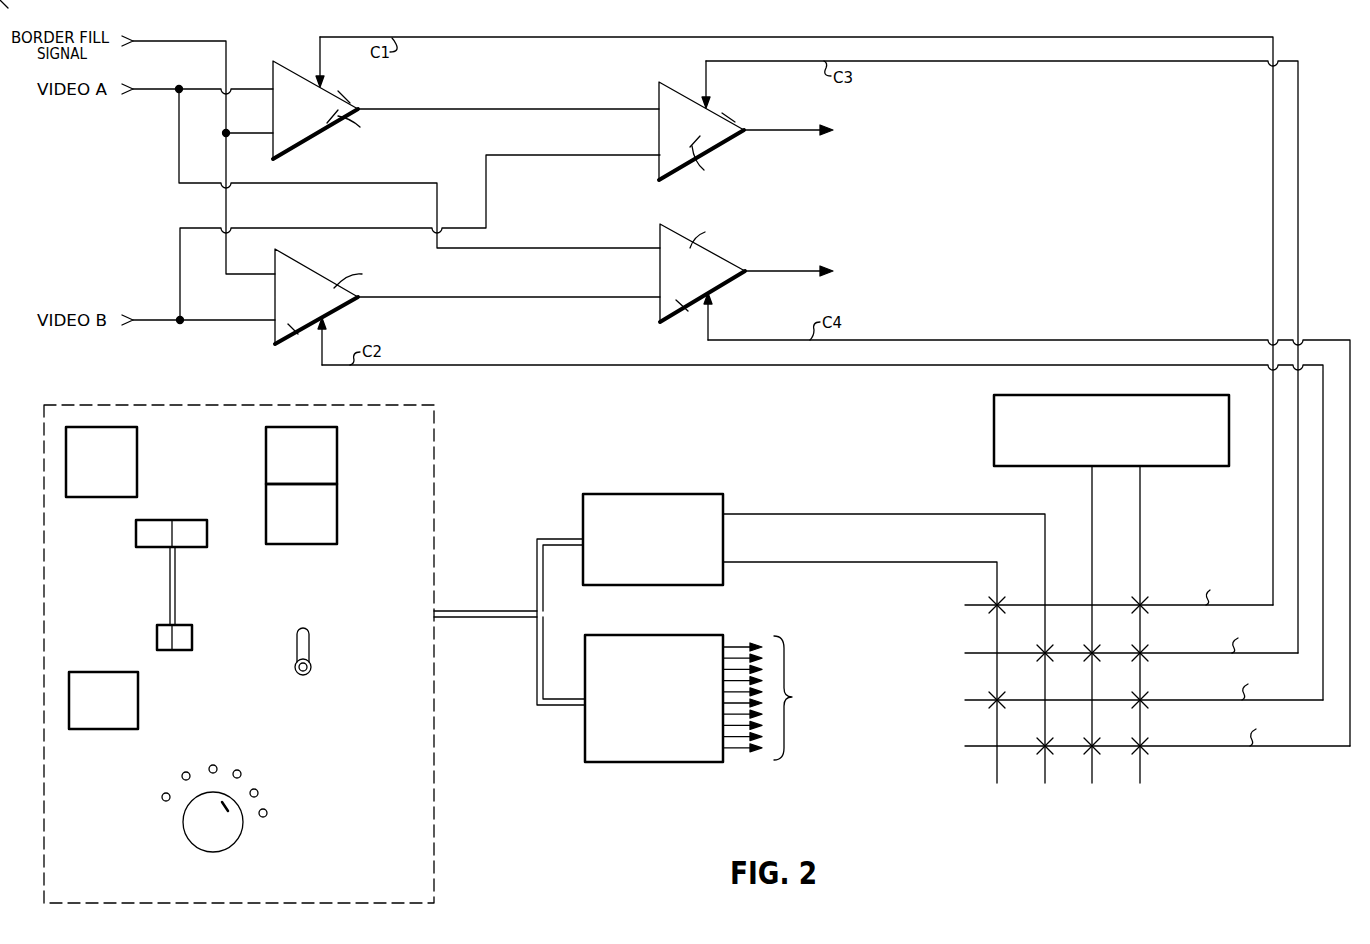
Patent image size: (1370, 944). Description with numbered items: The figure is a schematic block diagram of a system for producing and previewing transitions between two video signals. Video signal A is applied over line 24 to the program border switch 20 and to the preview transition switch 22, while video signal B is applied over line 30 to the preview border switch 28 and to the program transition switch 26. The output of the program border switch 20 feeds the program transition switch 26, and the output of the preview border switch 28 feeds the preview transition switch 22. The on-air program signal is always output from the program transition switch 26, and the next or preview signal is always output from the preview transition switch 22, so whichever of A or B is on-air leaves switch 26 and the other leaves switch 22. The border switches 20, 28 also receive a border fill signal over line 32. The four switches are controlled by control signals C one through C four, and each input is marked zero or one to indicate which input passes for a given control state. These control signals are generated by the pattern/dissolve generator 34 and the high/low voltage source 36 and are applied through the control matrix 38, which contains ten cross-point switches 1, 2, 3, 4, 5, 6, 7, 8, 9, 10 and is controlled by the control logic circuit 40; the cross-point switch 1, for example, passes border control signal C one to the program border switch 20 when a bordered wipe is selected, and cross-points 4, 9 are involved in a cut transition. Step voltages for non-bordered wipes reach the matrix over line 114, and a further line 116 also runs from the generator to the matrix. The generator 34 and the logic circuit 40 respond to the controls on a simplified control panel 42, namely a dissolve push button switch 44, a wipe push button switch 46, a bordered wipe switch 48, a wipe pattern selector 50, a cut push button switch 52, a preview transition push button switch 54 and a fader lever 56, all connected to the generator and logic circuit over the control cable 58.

The program border switch 20 is at (343, 98).
The preview transition switch 22 is at (686, 305).
The line 24 is at (414, 160).
The program transition switch 26 is at (728, 118).
The preview border switch 28 is at (300, 328).
The line 30 is at (392, 206).
The line 32 is at (206, 18).
The pattern/dissolve generator 34 is at (664, 500).
The high/low voltage source 36 is at (1000, 438).
The control matrix 38 is at (675, 410).
The control logic circuit 40 is at (648, 748).
The control panel 42 is at (434, 470).
The dissolve push button switch 44 is at (337, 463).
The wipe push button switch 46 is at (337, 520).
The bordered wipe switch 48 is at (310, 643).
The wipe pattern selector 50 is at (311, 818).
The cut push button switch 52 is at (138, 706).
The preview transition push button switch 54 is at (137, 452).
The fader lever 56 is at (170, 578).
The control cable 58 is at (480, 611).
The line 114 is at (870, 514).
The line 116 is at (886, 562).
The cross-point switch 1 is at (1012, 583).
The cross-point switch 2 is at (1157, 582).
The cross-point switch 3 is at (1060, 636).
The cross-point switch 4 is at (1110, 636).
The cross-point switch 5 is at (1157, 636).
The cross-point switch 6 is at (1015, 682).
The cross-point switch 7 is at (1160, 680).
The cross-point switch 8 is at (1062, 726).
The cross-point switch 9 is at (1108, 726).
The cross-point switch 10 is at (1162, 725).